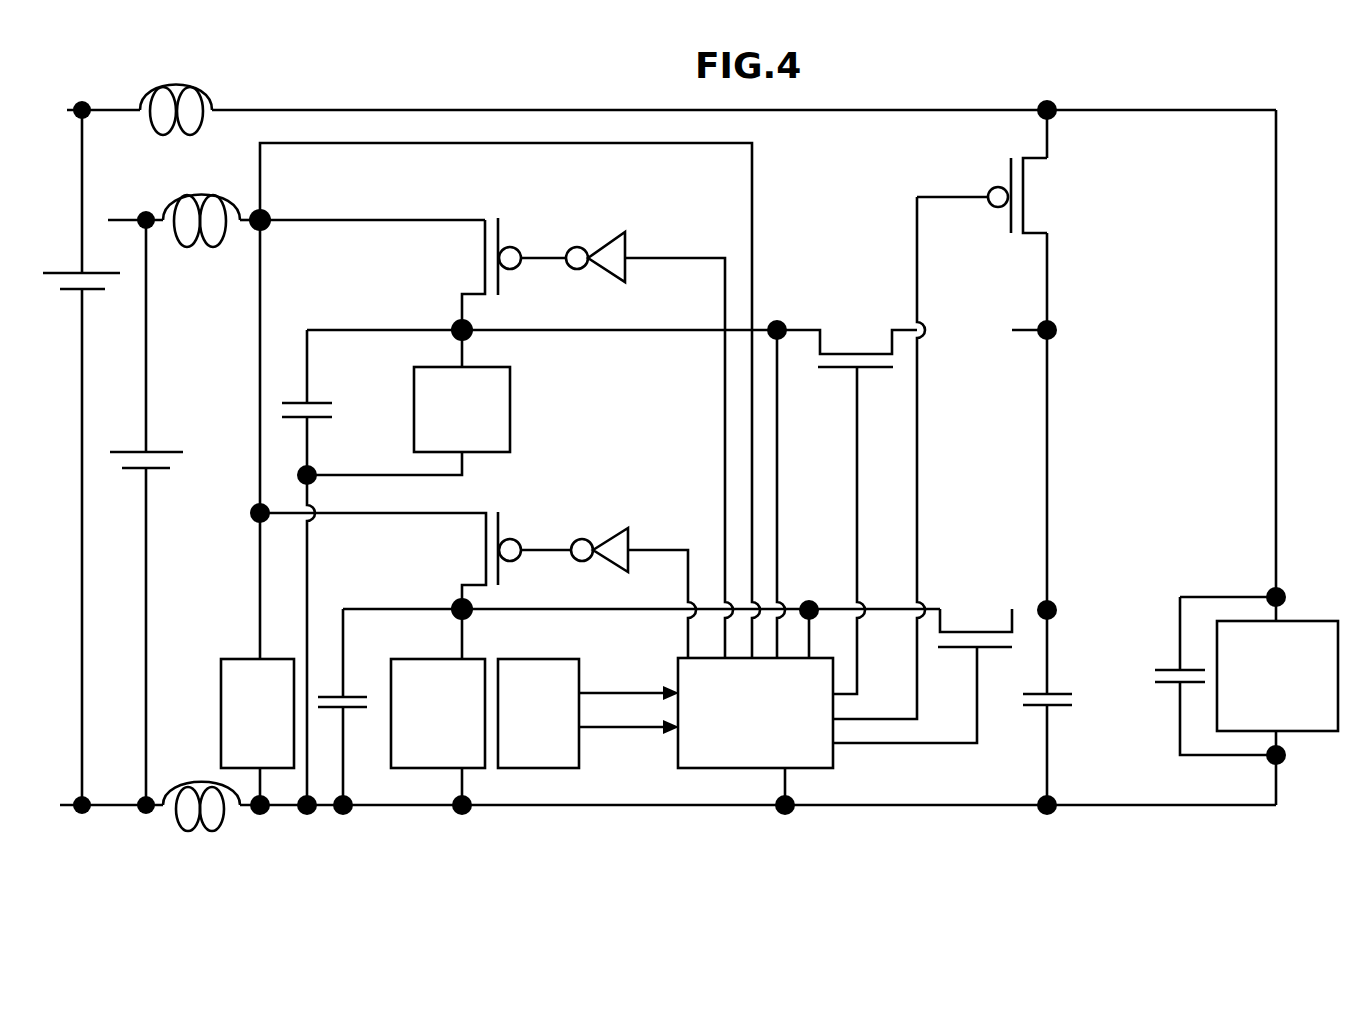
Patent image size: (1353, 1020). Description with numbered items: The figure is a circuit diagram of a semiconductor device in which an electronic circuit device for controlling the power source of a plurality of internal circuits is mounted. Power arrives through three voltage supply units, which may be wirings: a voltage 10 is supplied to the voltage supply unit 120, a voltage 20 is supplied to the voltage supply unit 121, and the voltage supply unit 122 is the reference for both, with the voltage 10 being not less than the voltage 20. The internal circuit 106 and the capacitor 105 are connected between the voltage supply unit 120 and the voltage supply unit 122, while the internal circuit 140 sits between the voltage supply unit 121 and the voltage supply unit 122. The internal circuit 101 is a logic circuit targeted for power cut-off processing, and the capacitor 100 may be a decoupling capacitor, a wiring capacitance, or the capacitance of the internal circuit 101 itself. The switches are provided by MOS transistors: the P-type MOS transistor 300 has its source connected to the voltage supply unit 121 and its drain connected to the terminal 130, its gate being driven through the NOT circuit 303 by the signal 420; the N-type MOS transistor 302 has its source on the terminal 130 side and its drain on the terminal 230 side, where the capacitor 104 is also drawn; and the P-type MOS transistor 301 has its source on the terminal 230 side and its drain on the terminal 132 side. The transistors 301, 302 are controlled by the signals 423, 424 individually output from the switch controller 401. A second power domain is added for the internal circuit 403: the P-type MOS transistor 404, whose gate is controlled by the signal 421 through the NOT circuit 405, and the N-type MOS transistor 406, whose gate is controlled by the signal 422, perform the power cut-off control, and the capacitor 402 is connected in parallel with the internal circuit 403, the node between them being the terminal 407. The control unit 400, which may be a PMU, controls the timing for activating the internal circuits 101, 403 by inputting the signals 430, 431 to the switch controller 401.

The voltage 10 is at (96, 292).
The voltage 20 is at (158, 470).
The capacitor 100 is at (350, 696).
The internal circuit 101 is at (425, 764).
The capacitor 104 is at (1058, 696).
The capacitor 105 is at (1170, 682).
The internal circuit 106 is at (1232, 630).
The voltage supply unit 120 is at (408, 108).
The voltage supply unit 121 is at (335, 219).
The voltage supply unit 122 is at (660, 806).
The terminal 130 is at (454, 604).
The terminal 132 is at (1058, 116).
The internal circuit 140 is at (240, 658).
The terminal 230 is at (1056, 326).
The P-type MOS transistor 300 is at (506, 522).
The P-type MOS transistor 301 is at (1032, 226).
The N-type MOS transistor 302 is at (953, 632).
The NOT circuit 303 is at (630, 526).
The control unit 400 is at (512, 764).
The switch controller 401 is at (727, 763).
The capacitor 402 is at (322, 400).
The internal circuit 403 is at (512, 400).
The P-type MOS transistor 404 is at (505, 222).
The NOT circuit 405 is at (630, 238).
The N-type MOS transistor 406 is at (840, 352).
The terminal 407 is at (455, 323).
The signal 420 is at (646, 548).
The signal 421 is at (716, 280).
The signal 422 is at (852, 480).
The signal 423 is at (922, 510).
The signal 424 is at (952, 746).
The signal 430 is at (600, 690).
The signal 431 is at (640, 736).